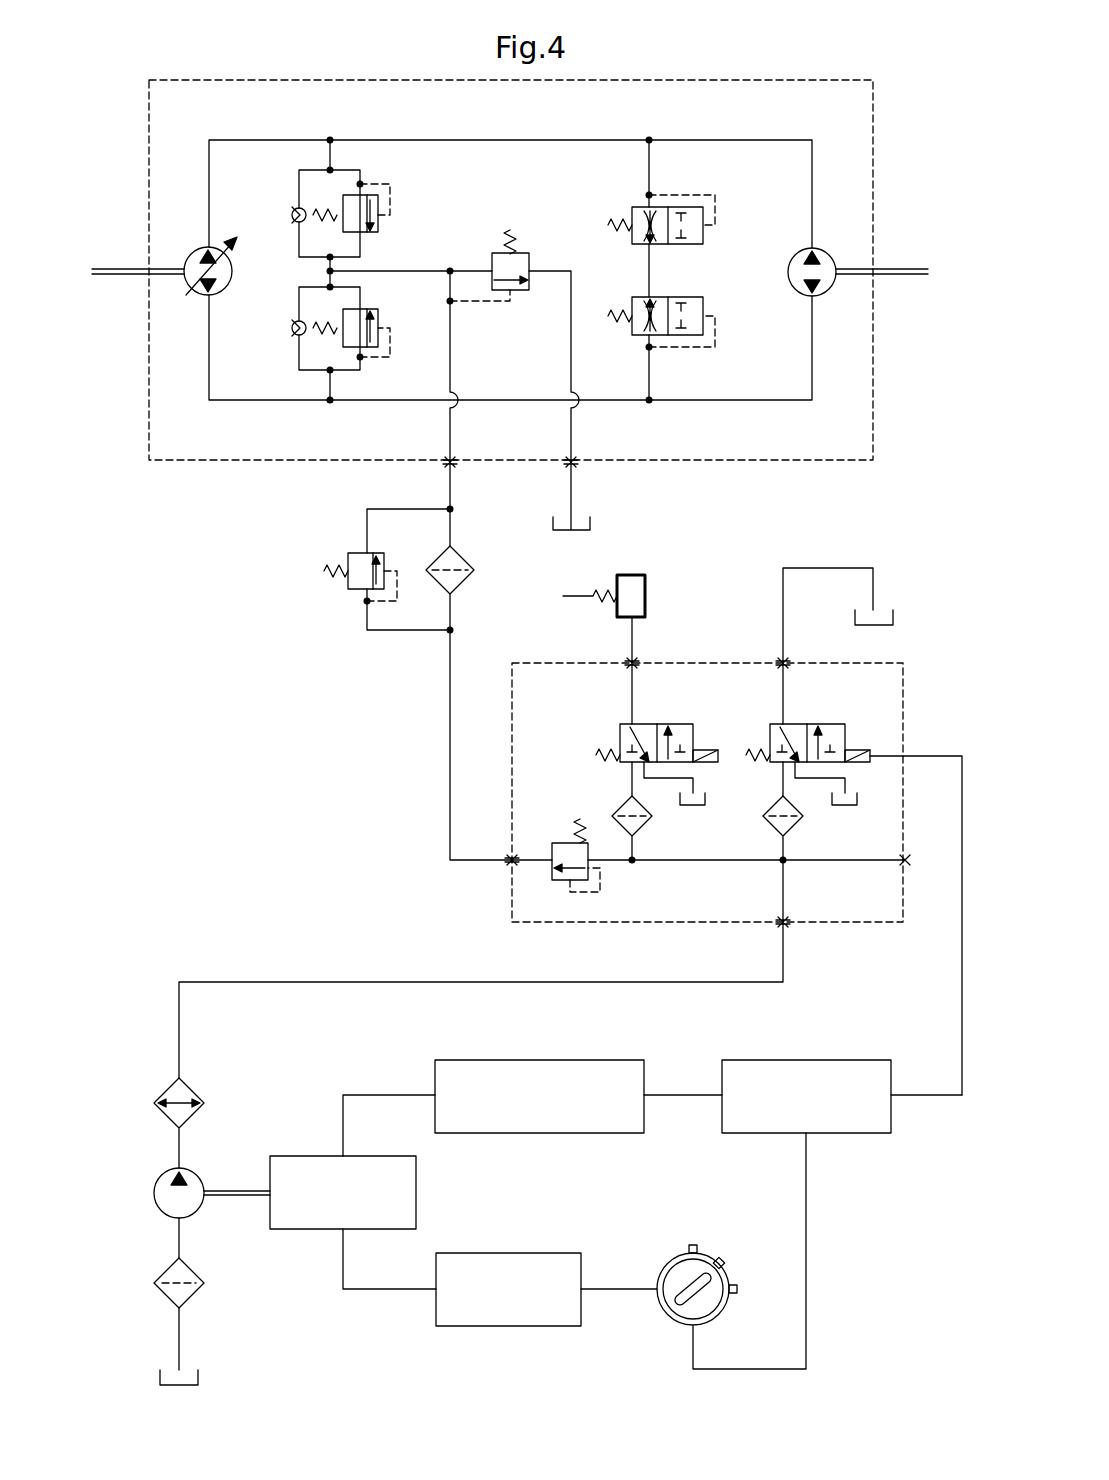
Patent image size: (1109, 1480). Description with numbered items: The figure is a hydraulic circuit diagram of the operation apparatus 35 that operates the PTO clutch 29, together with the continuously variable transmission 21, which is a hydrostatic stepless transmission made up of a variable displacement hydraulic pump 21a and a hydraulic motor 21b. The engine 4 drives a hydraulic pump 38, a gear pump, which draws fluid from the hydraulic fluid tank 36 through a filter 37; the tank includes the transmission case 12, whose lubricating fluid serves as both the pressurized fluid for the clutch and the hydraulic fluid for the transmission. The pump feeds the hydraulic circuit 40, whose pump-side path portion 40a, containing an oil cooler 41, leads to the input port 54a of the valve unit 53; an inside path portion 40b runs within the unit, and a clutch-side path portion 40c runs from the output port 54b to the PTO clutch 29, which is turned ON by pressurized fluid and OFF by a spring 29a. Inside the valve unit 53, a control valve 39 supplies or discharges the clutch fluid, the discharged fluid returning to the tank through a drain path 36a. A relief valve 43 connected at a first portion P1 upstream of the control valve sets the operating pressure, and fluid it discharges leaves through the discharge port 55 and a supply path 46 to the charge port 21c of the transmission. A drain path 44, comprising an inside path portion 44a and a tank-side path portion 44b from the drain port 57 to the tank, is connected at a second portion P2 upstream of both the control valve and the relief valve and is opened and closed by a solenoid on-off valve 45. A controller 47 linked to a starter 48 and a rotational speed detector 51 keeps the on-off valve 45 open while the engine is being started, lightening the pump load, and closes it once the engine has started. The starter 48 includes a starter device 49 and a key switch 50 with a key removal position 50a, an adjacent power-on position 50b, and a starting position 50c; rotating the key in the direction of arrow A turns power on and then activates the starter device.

The continuously variable transmission 21 is at (875, 133).
The variable displacement hydraulic pump 21a is at (192, 250).
The hydraulic motor 21b is at (832, 252).
The charge port 21c is at (448, 470).
The PTO clutch 29 is at (645, 575).
The spring 29a is at (600, 596).
The operation apparatus 35 is at (300, 718).
The hydraulic fluid tank 36 is at (560, 931).
The drain path 36a is at (693, 778).
The filter 37 is at (652, 828).
The hydraulic pump 38 is at (160, 1180).
The control valve 39 is at (645, 724).
The engine 4 is at (305, 1156).
The hydraulic circuit 40 is at (544, 831).
The pump-side path portion 40a is at (304, 980).
The inside path portion 40b is at (660, 862).
The clutch-side path portion 40c is at (635, 648).
The oil cooler 41 is at (168, 1088).
The relief valve 43 is at (562, 843).
The drain path 44 is at (837, 629).
The inside path portion 44a is at (782, 693).
The tank-side path portion 44b is at (838, 568).
The on-off valve 45 is at (797, 724).
The supply path 46 is at (450, 770).
The controller 47 is at (832, 1060).
The starter 48 is at (575, 1222).
The starter device 49 is at (480, 1326).
The key switch 50 is at (657, 1308).
The key removal position 50a is at (740, 1295).
The power-on position 50b is at (724, 1260).
The starting position 50c is at (693, 1245).
The rotational speed detector 51 is at (560, 1060).
The valve unit 53 is at (542, 662).
The input port 54a is at (788, 926).
The output port 54b is at (628, 662).
The discharge port 55 is at (508, 864).
The drain port 57 is at (780, 662).
The transmission case 12 is at (179, 1346).
The first portion P1 is at (631, 863).
The second portion P2 is at (784, 863).
The arrow A is at (652, 1268).